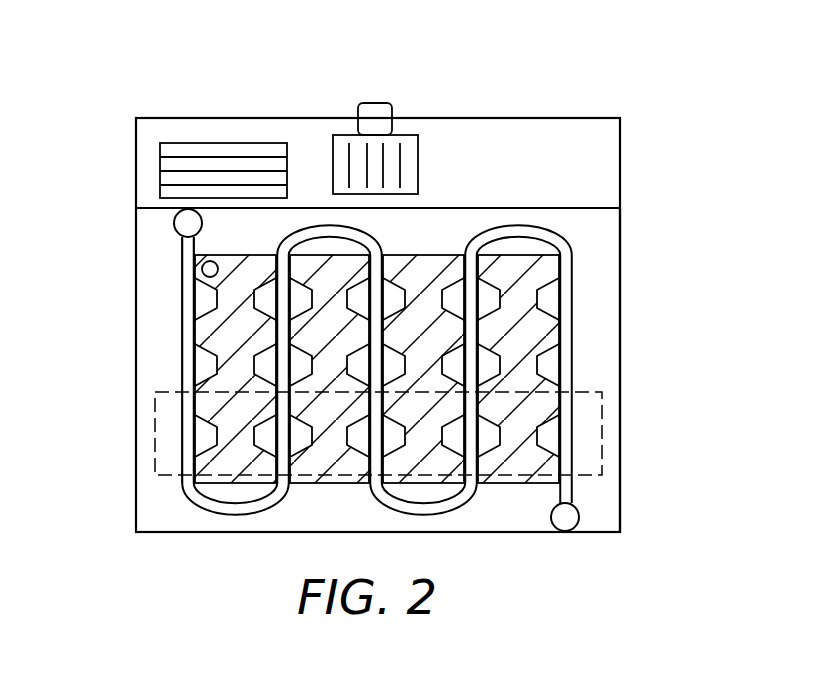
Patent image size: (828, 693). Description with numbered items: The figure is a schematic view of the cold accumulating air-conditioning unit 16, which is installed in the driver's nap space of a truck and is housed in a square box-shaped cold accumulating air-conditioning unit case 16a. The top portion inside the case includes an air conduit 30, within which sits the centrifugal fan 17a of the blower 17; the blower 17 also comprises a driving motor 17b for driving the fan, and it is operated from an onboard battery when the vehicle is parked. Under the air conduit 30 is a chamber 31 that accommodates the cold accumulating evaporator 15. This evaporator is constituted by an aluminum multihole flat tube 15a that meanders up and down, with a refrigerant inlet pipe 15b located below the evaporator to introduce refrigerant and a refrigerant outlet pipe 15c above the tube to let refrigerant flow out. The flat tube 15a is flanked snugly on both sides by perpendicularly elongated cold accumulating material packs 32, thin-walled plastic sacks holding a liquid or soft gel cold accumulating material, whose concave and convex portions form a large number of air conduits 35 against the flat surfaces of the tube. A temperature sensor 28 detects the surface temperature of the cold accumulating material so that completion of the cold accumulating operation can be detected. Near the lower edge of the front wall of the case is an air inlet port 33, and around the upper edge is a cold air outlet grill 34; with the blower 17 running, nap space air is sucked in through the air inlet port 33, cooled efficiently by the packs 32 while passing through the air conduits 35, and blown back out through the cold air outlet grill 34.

The cold accumulating air-conditioning unit 16 is at (632, 121).
The cold accumulating air-conditioning unit case 16a is at (576, 118).
The blower 17 is at (372, 99).
The centrifugal fan 17a is at (418, 137).
The driving motor 17b is at (378, 103).
The air conduit 30 is at (482, 166).
The cold air outlet grill 34 is at (165, 163).
The chamber 31 is at (612, 333).
The cold accumulating material packs 32 is at (557, 342).
The air conduits 35 is at (558, 300).
The cold accumulating evaporator 15 is at (178, 303).
The multihole flat tube 15a is at (185, 368).
The refrigerant inlet pipe 15b is at (579, 520).
The refrigerant outlet pipe 15c is at (174, 228).
The temperature sensor 28 is at (202, 270).
The air inlet port 33 is at (163, 450).